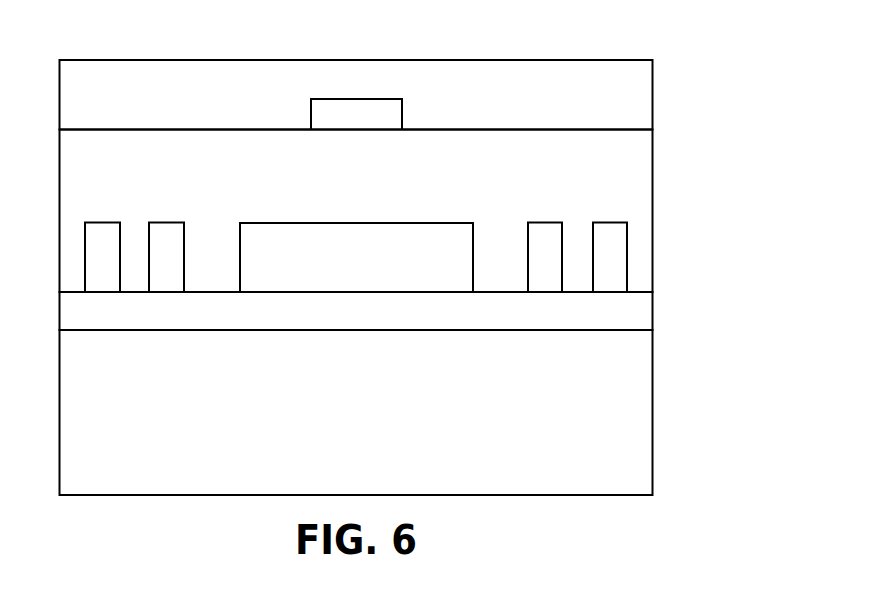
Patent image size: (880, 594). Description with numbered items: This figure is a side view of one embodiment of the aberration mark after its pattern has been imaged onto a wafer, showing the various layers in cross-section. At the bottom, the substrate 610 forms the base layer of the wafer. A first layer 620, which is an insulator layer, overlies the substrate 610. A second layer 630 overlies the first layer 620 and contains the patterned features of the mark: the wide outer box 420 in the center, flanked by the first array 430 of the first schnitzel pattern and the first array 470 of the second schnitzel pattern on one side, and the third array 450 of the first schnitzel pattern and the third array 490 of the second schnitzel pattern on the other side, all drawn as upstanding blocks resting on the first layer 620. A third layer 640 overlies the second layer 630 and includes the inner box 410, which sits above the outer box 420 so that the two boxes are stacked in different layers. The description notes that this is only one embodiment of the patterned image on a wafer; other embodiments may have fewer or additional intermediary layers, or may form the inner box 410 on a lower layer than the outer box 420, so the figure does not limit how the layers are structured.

The inner box 410 is at (357, 99).
The outer box 420 is at (357, 223).
The first array of the first schnitzel pattern 430 is at (544, 223).
The third array of the first schnitzel pattern 450 is at (166, 222).
The first array of the second schnitzel pattern 470 is at (609, 223).
The third array of the second schnitzel pattern 490 is at (102, 222).
The substrate 610 is at (652, 391).
The first layer 620 is at (652, 313).
The second layer 630 is at (652, 160).
The third layer 640 is at (652, 99).